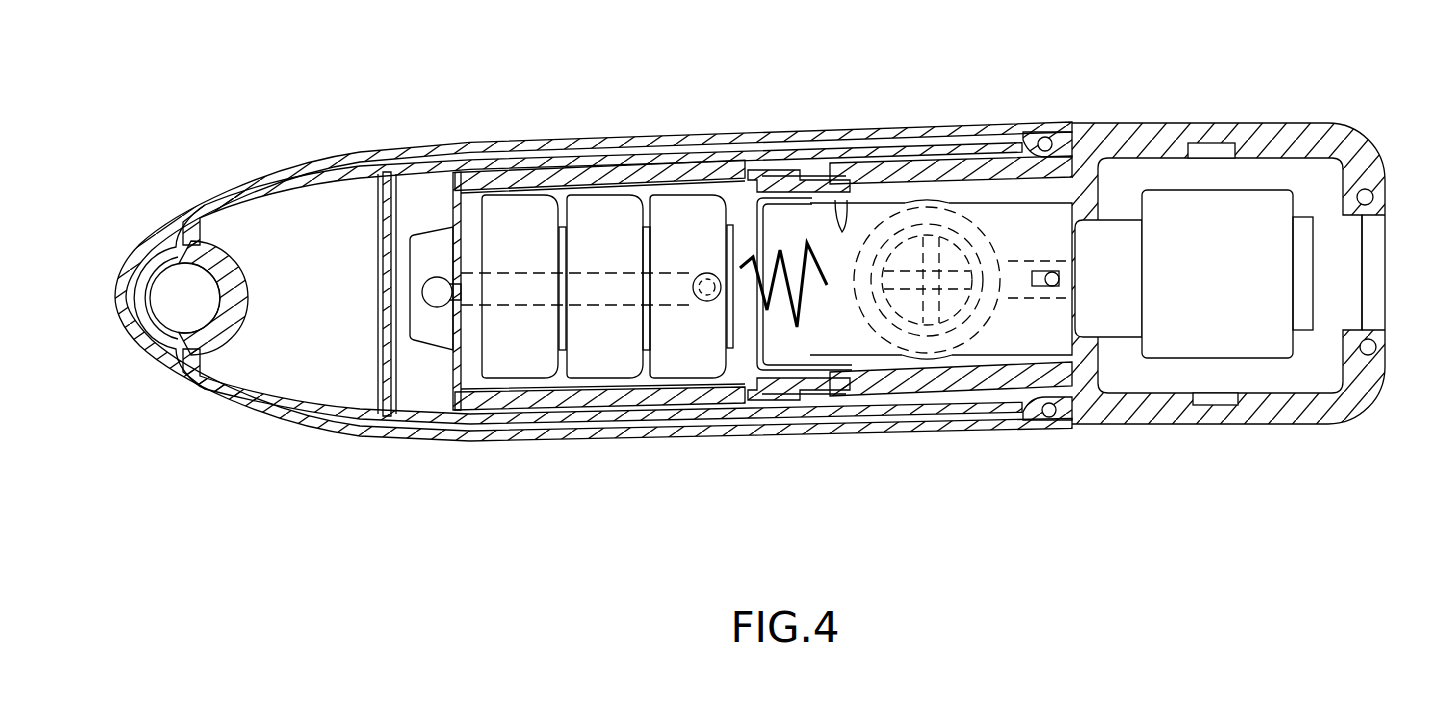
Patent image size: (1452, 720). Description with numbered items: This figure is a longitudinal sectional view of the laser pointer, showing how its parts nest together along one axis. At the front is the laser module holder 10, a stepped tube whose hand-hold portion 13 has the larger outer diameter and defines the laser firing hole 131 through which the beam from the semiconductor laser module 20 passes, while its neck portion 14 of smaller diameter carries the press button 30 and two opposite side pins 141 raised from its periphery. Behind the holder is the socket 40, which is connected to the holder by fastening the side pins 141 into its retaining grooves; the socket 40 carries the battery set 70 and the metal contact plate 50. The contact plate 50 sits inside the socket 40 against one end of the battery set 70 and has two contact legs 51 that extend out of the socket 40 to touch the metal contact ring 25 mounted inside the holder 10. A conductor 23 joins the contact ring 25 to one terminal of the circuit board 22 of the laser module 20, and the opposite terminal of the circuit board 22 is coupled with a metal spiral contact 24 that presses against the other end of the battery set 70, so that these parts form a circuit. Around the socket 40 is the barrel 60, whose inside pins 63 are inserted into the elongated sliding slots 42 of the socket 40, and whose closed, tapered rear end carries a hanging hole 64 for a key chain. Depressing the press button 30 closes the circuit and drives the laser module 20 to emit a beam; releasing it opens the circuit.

The laser module holder 10 is at (1208, 115).
The hand-hold portion 13 is at (1140, 125).
The laser firing hole 131 is at (1380, 272).
The neck portion 14 is at (944, 156).
The semiconductor laser module 20 is at (1254, 375).
The circuit board 22 is at (838, 345).
The conductor 23 is at (858, 212).
The metal spiral contact 24 is at (748, 360).
The metal contact ring 25 is at (740, 174).
The press button 30 is at (1000, 352).
The socket 40 is at (516, 172).
The elongated sliding slots 42 is at (512, 300).
The metal contact plate 50 is at (452, 207).
The contact legs 51 is at (640, 190).
The barrel 60 is at (593, 128).
The inside pins 63 is at (700, 305).
The hanging hole 64 is at (186, 283).
The battery set 70 is at (609, 365).
The side pins 141 is at (782, 160).